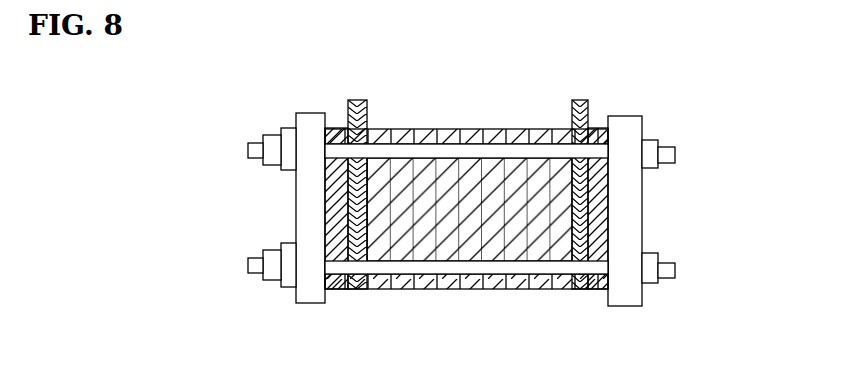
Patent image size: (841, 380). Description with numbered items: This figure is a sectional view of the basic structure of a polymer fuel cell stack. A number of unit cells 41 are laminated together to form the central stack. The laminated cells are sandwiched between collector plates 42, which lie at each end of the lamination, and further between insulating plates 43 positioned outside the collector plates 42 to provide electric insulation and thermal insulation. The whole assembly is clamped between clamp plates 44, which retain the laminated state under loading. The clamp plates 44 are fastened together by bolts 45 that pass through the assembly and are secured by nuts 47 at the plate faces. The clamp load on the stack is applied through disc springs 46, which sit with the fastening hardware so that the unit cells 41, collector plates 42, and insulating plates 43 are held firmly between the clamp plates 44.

The unit cells 41 is at (490, 130).
The collector plates 42 is at (355, 101).
The insulating plates 43 is at (338, 128).
The clamp plates 44 is at (308, 113).
The bolts 45 is at (463, 268).
The disc springs 46 is at (283, 290).
The nuts 47 is at (274, 283).